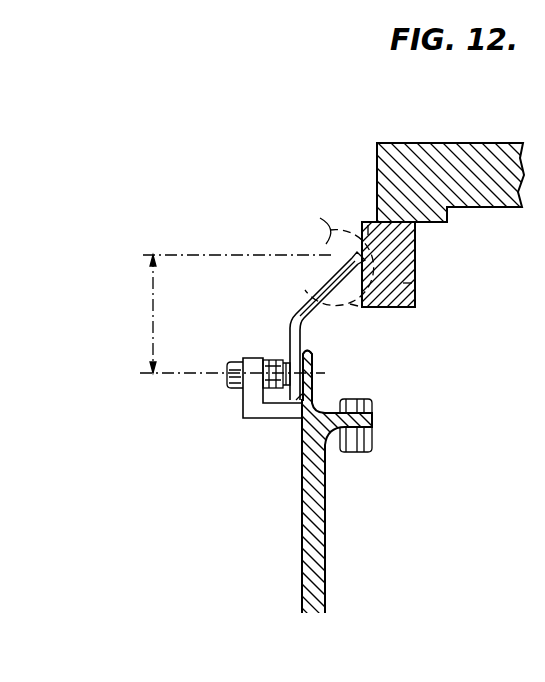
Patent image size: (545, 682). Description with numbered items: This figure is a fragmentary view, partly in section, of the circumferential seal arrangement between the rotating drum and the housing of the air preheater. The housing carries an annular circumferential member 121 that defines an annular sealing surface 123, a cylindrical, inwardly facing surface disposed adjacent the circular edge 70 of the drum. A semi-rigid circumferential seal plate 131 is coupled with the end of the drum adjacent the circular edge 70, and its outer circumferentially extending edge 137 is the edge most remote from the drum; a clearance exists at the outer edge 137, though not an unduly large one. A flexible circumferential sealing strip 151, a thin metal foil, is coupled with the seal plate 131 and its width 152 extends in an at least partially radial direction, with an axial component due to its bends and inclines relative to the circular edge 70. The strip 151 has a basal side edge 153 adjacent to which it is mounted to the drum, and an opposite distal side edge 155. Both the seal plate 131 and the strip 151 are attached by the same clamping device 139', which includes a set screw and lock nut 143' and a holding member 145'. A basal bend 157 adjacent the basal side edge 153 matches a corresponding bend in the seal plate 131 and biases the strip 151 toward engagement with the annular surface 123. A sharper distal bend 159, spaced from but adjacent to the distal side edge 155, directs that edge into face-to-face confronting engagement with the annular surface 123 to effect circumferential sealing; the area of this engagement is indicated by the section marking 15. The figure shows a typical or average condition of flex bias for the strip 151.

The section line for FIG. 15 is at (339, 268).
The circular edge 70 is at (302, 466).
The annular circumferential member 121 is at (416, 240).
The annular sealing surface 123 is at (350, 304).
The circumferential seal plate 131 is at (316, 332).
The outer circumferentially extending edge 137 is at (403, 283).
The clamping device 139' is at (232, 406).
The set screw and lock nut 143' is at (205, 389).
The holding member 145' is at (245, 355).
The circumferential sealing strip 151 is at (321, 292).
The width 152 is at (150, 311).
The basal side edge 153 is at (300, 396).
The distal side edge 155 is at (368, 232).
The basal bend 157 is at (293, 345).
The distal bend 159 is at (326, 247).